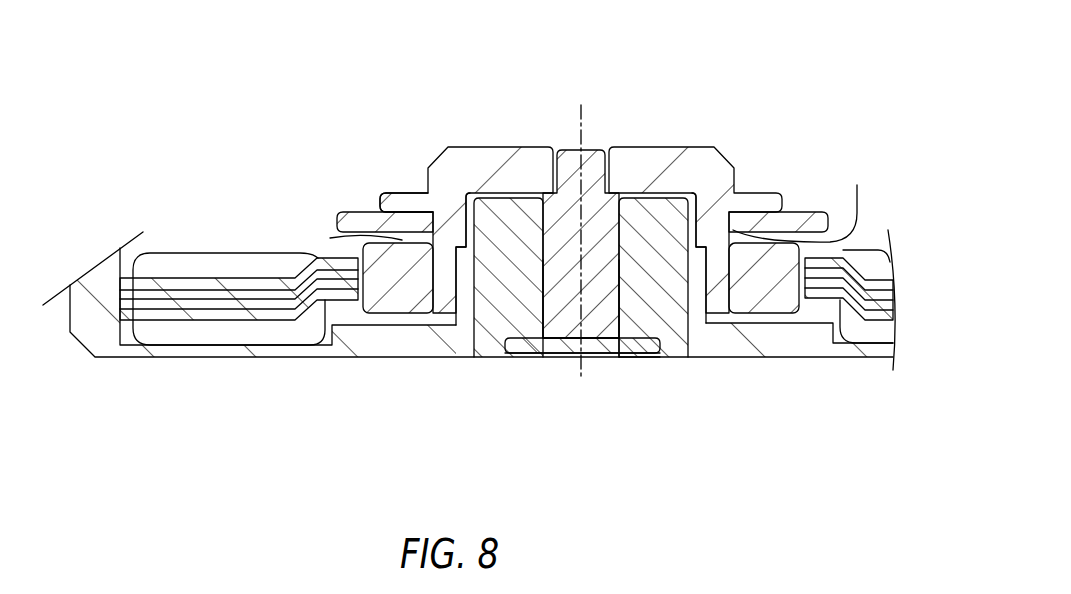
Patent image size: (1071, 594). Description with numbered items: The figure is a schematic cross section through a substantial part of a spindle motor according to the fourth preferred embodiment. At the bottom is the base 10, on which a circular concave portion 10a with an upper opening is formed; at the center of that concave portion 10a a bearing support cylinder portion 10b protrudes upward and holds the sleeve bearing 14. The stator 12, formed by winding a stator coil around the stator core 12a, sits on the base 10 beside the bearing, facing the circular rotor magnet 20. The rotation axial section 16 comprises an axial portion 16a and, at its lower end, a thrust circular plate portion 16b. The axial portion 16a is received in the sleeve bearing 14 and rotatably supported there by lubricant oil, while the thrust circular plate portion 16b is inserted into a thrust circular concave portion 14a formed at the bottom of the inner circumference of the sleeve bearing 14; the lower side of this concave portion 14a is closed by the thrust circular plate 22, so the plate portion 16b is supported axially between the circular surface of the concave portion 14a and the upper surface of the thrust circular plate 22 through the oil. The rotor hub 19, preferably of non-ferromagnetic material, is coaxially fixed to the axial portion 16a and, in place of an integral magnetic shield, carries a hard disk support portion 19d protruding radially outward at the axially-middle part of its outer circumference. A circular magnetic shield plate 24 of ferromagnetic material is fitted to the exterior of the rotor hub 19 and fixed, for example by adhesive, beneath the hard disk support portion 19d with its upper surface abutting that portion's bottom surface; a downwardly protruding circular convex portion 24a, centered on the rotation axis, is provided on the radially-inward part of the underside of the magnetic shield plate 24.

The base 10 is at (383, 347).
The circular concave portion 10a is at (157, 228).
The bearing support cylinder portion 10b is at (467, 292).
The stator 12 is at (506, 256).
The stator core 12a is at (183, 305).
The sleeve bearing 14 is at (497, 310).
The thrust circular concave portion 14a is at (643, 340).
The rotation axial section 16 is at (562, 136).
The axial portion 16a is at (597, 303).
The thrust circular plate portion 16b is at (538, 345).
The rotor hub 19 is at (715, 175).
The hard disk support portion 19d is at (397, 190).
The circular rotor magnet 20 is at (760, 277).
The thrust circular plate 22 is at (553, 355).
The magnetic shield plate 24 is at (370, 220).
The convex portion 24a is at (330, 238).